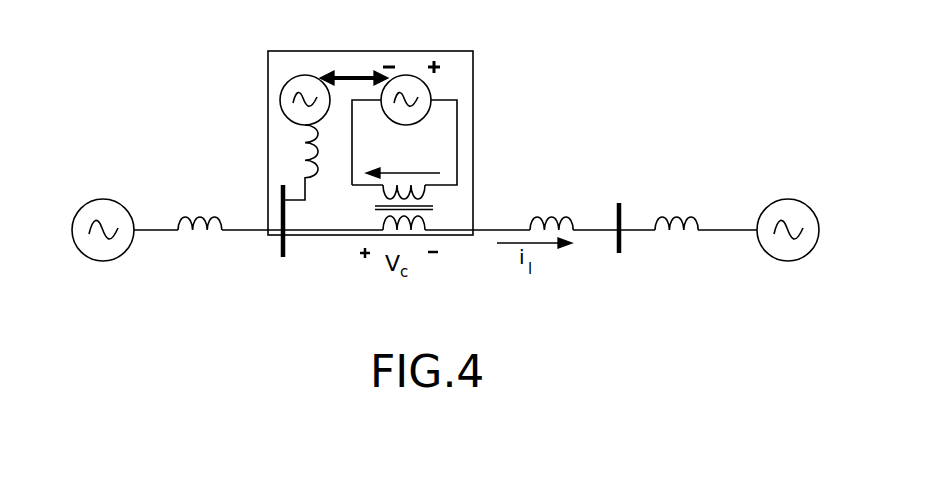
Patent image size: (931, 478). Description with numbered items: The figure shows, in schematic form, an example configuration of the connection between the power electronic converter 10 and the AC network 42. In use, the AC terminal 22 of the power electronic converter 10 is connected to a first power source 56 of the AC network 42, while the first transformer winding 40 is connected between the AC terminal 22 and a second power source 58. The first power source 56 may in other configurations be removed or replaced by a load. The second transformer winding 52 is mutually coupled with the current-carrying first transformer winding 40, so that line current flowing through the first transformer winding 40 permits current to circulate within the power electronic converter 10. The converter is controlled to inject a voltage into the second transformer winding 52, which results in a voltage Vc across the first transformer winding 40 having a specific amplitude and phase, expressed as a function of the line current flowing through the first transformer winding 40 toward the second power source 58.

The power electronic converter 10 is at (322, 62).
The AC terminal 22 is at (292, 243).
The first transformer winding 40 is at (432, 220).
The AC network 42 is at (630, 184).
The second transformer winding 52 is at (428, 192).
The first power source 56 is at (95, 208).
The second power source 58 is at (792, 210).